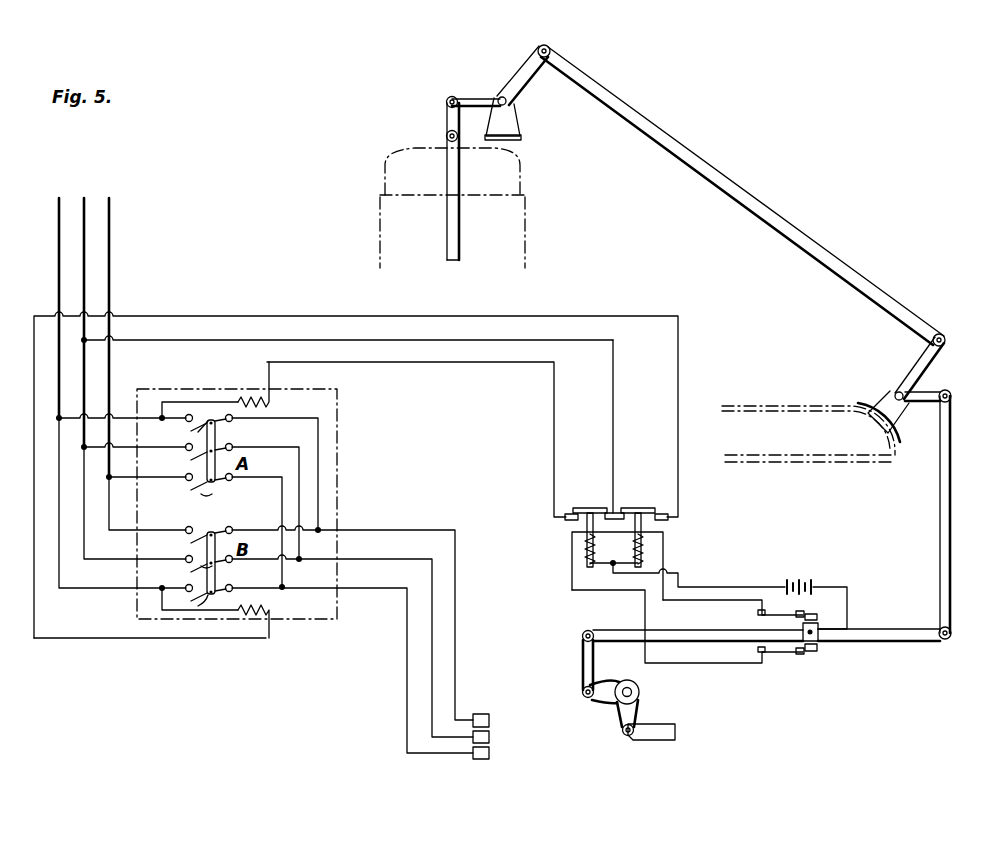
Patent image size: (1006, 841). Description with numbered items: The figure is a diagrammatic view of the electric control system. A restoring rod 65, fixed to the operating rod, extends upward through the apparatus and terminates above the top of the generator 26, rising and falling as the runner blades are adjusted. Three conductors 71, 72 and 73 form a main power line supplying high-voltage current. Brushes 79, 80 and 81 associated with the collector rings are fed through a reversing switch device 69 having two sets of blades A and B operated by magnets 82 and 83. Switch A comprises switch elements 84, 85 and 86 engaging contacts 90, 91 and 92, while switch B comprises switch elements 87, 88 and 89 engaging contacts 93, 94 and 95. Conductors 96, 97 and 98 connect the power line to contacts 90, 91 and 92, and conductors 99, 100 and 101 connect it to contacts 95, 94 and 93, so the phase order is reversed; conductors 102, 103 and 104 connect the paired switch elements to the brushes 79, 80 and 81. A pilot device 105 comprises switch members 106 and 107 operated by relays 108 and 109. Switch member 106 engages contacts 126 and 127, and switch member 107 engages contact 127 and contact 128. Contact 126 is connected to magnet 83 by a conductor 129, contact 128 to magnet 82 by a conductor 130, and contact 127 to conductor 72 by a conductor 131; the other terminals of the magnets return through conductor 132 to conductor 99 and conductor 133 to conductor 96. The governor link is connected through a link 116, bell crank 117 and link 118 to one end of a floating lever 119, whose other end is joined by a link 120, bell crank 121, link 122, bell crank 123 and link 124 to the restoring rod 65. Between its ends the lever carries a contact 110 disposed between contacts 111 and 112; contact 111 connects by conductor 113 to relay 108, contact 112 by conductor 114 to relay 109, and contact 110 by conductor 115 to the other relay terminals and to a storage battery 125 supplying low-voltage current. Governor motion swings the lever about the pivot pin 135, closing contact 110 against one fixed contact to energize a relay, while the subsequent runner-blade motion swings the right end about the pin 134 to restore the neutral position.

The generator 26 is at (527, 228).
The restoring rod 65 is at (447, 236).
The switch device 69 is at (337, 478).
The conductor 71 is at (59, 237).
The conductor 72 is at (84, 210).
The conductor 73 is at (109, 258).
The brush 79 is at (490, 721).
The brush 80 is at (490, 738).
The brush 81 is at (490, 756).
The magnet 82 is at (273, 399).
The magnet 83 is at (262, 605).
The switch element 84 is at (202, 428).
The switch element 85 is at (216, 424).
The switch element 86 is at (211, 484).
The switch element 87 is at (214, 533).
The switch element 88 is at (216, 585).
The switch element 89 is at (205, 618).
The electrical contact 90 is at (184, 424).
The electrical contact 91 is at (184, 453).
The electrical contact 92 is at (184, 482).
The electrical contact 93 is at (188, 536).
The electrical contact 94 is at (188, 567).
The electrical contact 95 is at (188, 600).
The conductor 96 is at (72, 414).
The conductor 97 is at (92, 449).
The conductor 98 is at (118, 479).
The conductor 99 is at (62, 549).
The conductor 100 is at (86, 568).
The conductor 101 is at (127, 533).
The conductor 102 is at (378, 530).
The conductor 103 is at (378, 559).
The conductor 104 is at (372, 588).
The pilot device 105 is at (617, 566).
The switch member 106 is at (634, 509).
The switch member 107 is at (605, 508).
The relay 108 is at (644, 551).
The relay 109 is at (586, 554).
The electrical contact 110 is at (805, 645).
The electrical contact 111 is at (832, 606).
The electrical contact 112 is at (820, 653).
The conductor 113 is at (718, 601).
The conductor 114 is at (720, 664).
The conductor 115 is at (829, 586).
The link 116 is at (661, 741).
The bell crank 117 is at (606, 701).
The link 118 is at (581, 670).
The floating lever 119 is at (700, 641).
The link 120 is at (951, 542).
The bell crank 121 is at (918, 361).
The link 122 is at (736, 193).
The bell crank 123 is at (530, 65).
The link 124 is at (447, 124).
The storage battery 125 is at (800, 582).
The contact 126 is at (669, 519).
The contact 127 is at (620, 507).
The contact 128 is at (566, 521).
The conductor 129 is at (92, 639).
The conductor 130 is at (522, 340).
The conductor 131 is at (613, 404).
The conductor 132 is at (177, 622).
The conductor 133 is at (181, 400).
The pin 134 is at (582, 635).
The pivot pin 135 is at (951, 638).